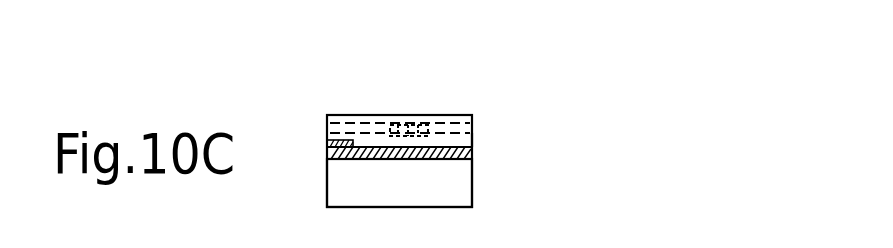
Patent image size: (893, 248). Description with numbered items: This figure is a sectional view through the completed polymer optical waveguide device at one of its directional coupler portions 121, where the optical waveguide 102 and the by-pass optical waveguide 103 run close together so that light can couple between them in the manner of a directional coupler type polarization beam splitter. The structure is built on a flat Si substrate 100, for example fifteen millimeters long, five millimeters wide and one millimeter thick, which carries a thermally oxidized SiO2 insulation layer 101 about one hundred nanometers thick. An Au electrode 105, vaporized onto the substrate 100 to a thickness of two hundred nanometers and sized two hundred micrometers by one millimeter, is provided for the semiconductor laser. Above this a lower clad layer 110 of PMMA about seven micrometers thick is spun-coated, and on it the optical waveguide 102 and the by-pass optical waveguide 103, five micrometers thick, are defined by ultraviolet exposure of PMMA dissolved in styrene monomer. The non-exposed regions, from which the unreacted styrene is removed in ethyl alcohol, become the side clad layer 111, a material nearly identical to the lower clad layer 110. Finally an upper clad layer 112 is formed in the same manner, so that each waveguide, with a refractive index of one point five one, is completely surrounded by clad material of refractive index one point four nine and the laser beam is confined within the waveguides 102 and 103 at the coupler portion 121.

The substrate 100 is at (327, 195).
The insulation layer 101 is at (472, 150).
The optical waveguide 102 is at (394, 112).
The by-pass optical waveguide 103 is at (445, 116).
The electrode 105 is at (327, 143).
The lower clad layer 110 is at (472, 144).
The side clad layer 111 is at (472, 128).
The upper clad layer 112 is at (472, 121).
The directional coupler portion 121 is at (416, 110).